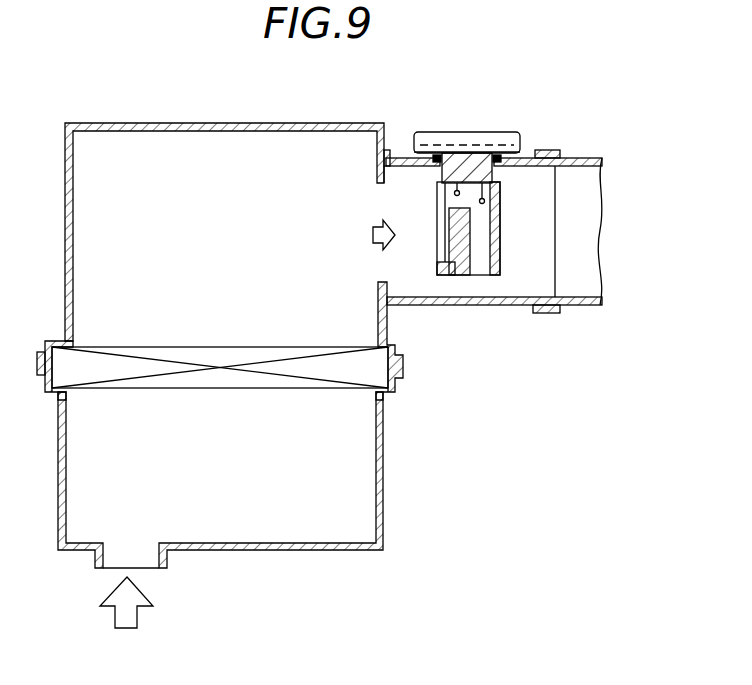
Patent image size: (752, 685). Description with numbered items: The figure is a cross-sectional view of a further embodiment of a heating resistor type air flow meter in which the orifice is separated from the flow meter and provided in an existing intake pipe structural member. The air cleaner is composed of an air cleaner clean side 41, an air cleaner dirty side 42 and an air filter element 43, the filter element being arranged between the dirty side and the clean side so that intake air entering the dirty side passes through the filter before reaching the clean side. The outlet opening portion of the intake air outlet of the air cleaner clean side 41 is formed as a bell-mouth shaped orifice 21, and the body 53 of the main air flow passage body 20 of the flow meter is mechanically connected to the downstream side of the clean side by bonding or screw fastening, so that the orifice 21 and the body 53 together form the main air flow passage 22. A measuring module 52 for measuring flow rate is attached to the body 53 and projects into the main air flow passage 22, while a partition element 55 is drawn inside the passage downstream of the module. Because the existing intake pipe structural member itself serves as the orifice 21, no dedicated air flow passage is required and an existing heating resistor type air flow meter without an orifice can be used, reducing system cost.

The air cleaner clean side 41 is at (171, 122).
The air cleaner dirty side 42 is at (387, 436).
The air filter element 43 is at (160, 353).
The orifice 21 is at (378, 172).
The main air flow passage 22 is at (375, 205).
The measuring module 52 is at (470, 133).
The body 53 is at (446, 312).
The main air flow passage body 20 is at (467, 214).
The partition 55 is at (578, 314).